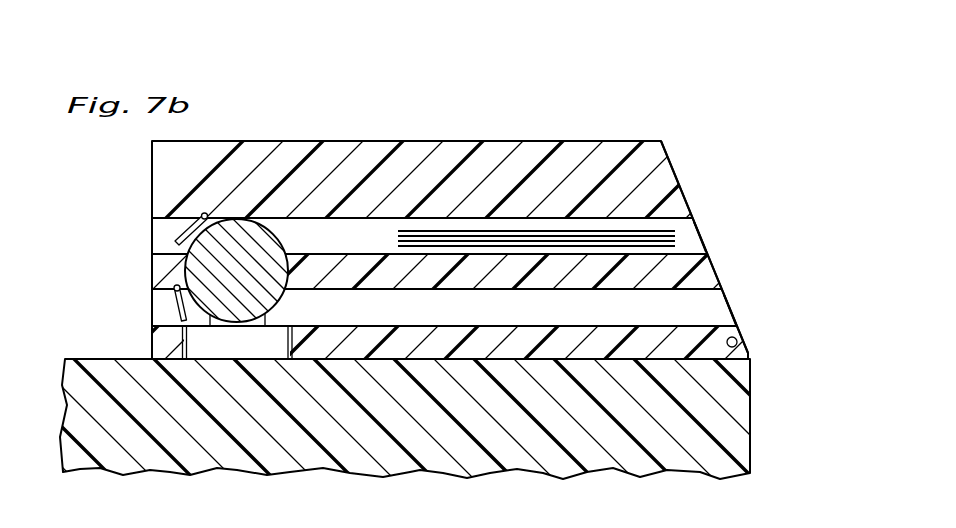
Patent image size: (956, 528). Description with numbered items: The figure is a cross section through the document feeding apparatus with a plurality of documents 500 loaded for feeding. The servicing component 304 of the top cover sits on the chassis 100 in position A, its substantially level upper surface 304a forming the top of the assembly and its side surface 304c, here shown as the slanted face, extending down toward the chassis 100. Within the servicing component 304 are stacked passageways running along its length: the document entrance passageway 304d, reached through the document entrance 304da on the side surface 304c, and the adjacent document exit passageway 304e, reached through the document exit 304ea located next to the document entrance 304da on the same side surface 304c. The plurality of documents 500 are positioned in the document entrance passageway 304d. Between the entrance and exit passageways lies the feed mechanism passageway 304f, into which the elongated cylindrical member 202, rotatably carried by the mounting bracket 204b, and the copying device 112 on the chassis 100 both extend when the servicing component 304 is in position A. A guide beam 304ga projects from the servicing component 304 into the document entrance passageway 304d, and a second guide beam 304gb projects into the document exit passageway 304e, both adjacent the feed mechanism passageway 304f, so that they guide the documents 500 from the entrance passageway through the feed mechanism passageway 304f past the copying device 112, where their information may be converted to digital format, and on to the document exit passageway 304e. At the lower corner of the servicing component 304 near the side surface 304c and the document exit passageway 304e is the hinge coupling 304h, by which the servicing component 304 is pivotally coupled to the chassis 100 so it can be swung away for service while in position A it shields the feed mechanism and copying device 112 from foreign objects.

The chassis 100 is at (769, 419).
The copying device 112 is at (227, 345).
The elongated cylindrical member 202 is at (217, 284).
The mounting bracket 204b is at (272, 318).
The servicing component 304 is at (478, 209).
The upper surface 304a is at (338, 141).
The side surface 304c is at (680, 171).
The document entrance passageway 304d is at (697, 232).
The document entrance 304da is at (701, 246).
The document exit passageway 304e is at (727, 303).
The document exit 304ea is at (737, 318).
The feed mechanism passageway 304f is at (288, 246).
The guide beam 304ga is at (175, 237).
The guide beam 304gb is at (176, 316).
The hinge coupling 304h is at (727, 345).
The plurality of documents 500 is at (512, 228).
The position A is at (641, 80).